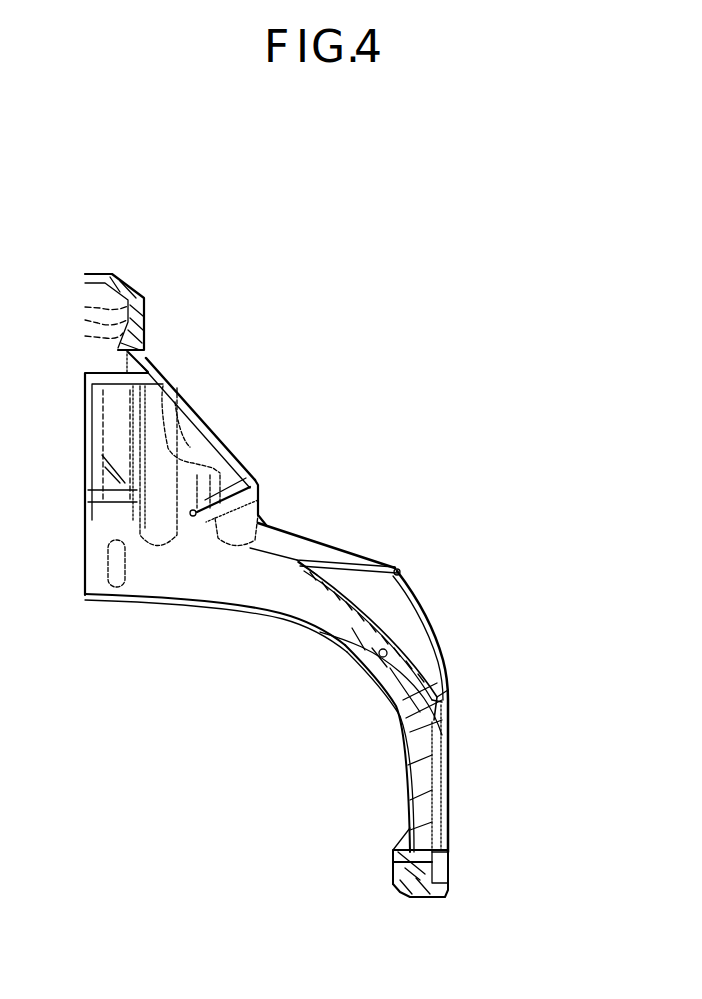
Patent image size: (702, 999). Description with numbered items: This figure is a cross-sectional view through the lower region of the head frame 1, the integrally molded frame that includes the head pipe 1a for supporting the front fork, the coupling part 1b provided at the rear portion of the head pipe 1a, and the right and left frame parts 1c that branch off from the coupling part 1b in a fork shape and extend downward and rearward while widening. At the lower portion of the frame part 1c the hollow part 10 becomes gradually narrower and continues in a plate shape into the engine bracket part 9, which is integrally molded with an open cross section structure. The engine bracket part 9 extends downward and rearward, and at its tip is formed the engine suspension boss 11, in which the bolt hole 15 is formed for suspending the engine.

The head pipe 1a is at (122, 284).
The coupling part 1b is at (147, 364).
The head frame 1 is at (207, 422).
The frame part 1c is at (292, 533).
The hollow part 10 is at (440, 633).
The engine bracket part 9 is at (450, 773).
The engine suspension boss 11 is at (391, 848).
The bolt hole 15 is at (391, 873).